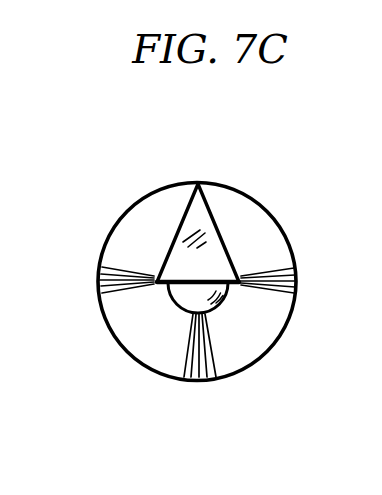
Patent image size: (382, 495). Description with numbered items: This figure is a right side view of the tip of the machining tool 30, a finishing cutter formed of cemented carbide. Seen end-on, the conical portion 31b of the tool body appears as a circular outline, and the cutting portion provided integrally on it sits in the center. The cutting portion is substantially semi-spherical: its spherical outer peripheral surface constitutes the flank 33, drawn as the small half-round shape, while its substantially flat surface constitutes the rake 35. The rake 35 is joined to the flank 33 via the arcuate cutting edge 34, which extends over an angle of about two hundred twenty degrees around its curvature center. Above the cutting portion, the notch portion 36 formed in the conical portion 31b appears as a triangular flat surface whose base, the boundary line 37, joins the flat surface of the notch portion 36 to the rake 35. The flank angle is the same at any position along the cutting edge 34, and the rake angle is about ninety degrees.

The machining tool 30 is at (271, 156).
The conical portion 31b is at (268, 233).
The flank 33 is at (185, 293).
The cutting edge 34 is at (230, 292).
The rake 35 is at (203, 302).
The notch portion 36 is at (193, 223).
The boundary line 37 is at (158, 276).